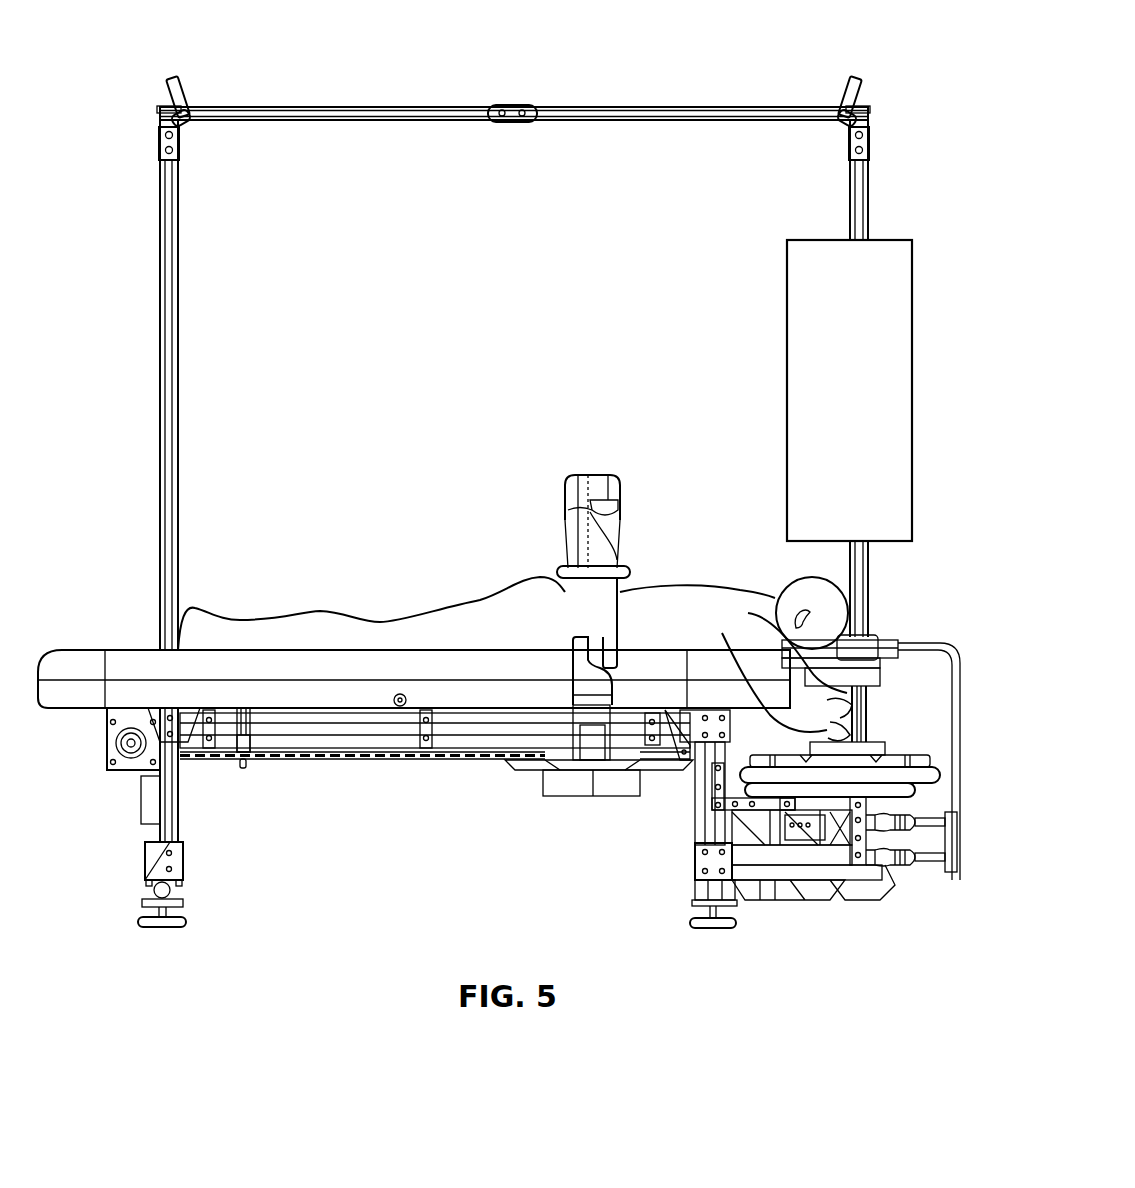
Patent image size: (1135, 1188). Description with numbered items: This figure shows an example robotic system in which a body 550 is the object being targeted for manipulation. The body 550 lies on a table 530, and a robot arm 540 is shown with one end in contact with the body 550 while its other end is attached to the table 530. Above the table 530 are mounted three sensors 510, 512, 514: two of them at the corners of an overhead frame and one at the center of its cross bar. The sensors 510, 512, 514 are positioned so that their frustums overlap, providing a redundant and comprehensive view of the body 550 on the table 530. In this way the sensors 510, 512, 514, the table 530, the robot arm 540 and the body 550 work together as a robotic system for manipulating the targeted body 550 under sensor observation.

The sensor 510 is at (170, 90).
The sensor 512 is at (512, 122).
The sensor 514 is at (858, 88).
The table 530 is at (137, 648).
The robot arm 540 is at (600, 474).
The body 550 is at (685, 585).